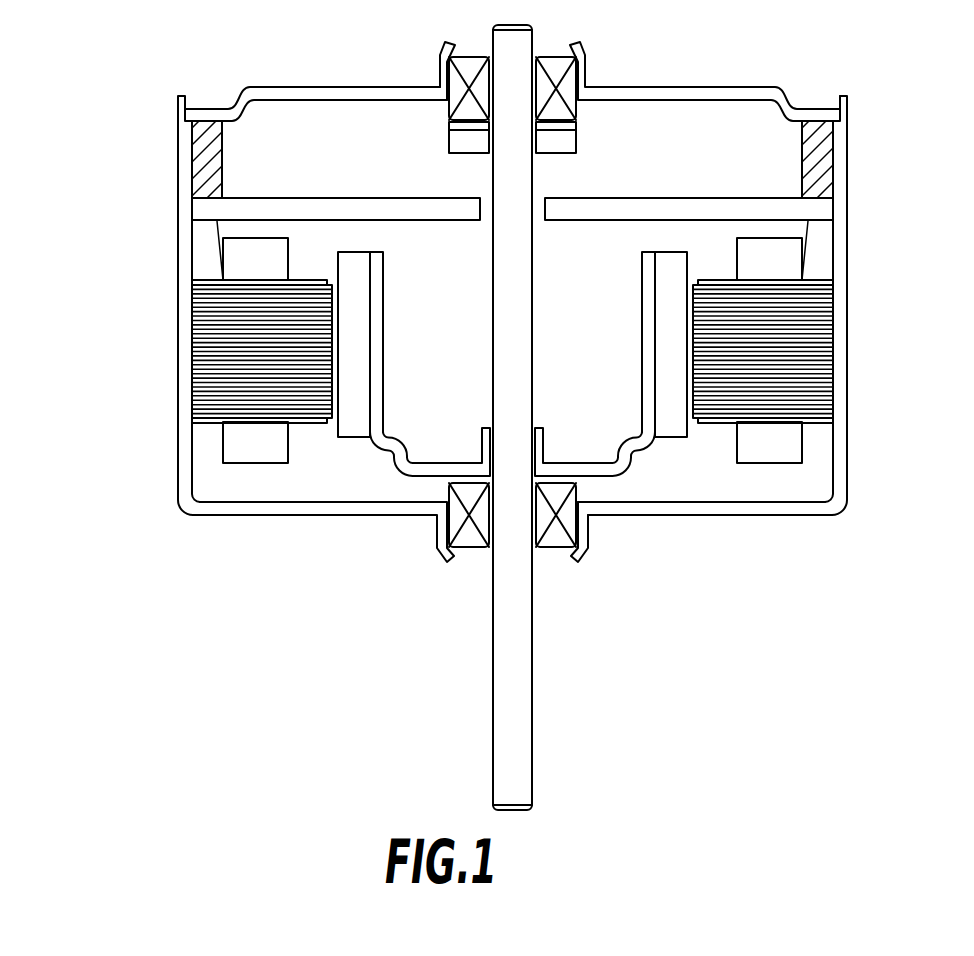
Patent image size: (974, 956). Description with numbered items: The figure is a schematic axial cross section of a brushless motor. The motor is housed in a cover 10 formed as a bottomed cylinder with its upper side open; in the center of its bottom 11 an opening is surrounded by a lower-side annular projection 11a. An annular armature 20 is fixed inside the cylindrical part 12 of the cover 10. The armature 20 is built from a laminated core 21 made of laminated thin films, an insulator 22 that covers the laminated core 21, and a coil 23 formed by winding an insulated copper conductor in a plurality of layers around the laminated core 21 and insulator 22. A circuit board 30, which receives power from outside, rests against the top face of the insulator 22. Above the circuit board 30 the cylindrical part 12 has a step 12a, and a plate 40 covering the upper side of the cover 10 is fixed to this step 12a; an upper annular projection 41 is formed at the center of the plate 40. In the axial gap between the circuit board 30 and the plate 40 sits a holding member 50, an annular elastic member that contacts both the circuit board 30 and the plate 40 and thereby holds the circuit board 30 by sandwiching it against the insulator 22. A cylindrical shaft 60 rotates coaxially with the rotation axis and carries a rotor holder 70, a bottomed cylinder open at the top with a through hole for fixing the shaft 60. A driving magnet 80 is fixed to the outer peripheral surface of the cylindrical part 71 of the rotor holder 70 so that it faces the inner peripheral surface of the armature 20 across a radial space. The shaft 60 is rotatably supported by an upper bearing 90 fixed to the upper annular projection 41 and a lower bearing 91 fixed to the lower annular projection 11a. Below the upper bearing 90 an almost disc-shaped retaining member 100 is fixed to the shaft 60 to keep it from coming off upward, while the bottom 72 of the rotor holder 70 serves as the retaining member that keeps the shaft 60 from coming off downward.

The cover 10 is at (575, 395).
The bottom 11 is at (310, 508).
The lower-side annular projection 11a is at (582, 532).
The cylindrical part 12 is at (842, 280).
The step 12a is at (842, 123).
The armature 20 is at (453, 419).
The laminated core 21 is at (238, 337).
The insulator 22 is at (209, 251).
The coil 23 is at (245, 433).
The circuit board 30 is at (297, 213).
The plate 40 is at (526, 75).
The upper annular projection 41 is at (443, 73).
The holding member 50 is at (204, 159).
The shaft 60 is at (523, 723).
The rotor holder 70 is at (528, 465).
The cylindrical part 71 is at (380, 347).
The bottom 72 is at (585, 466).
The magnet 80 is at (354, 447).
The upper bearing 90 is at (568, 85).
The lower bearing 91 is at (553, 544).
The retaining member 100 is at (558, 140).